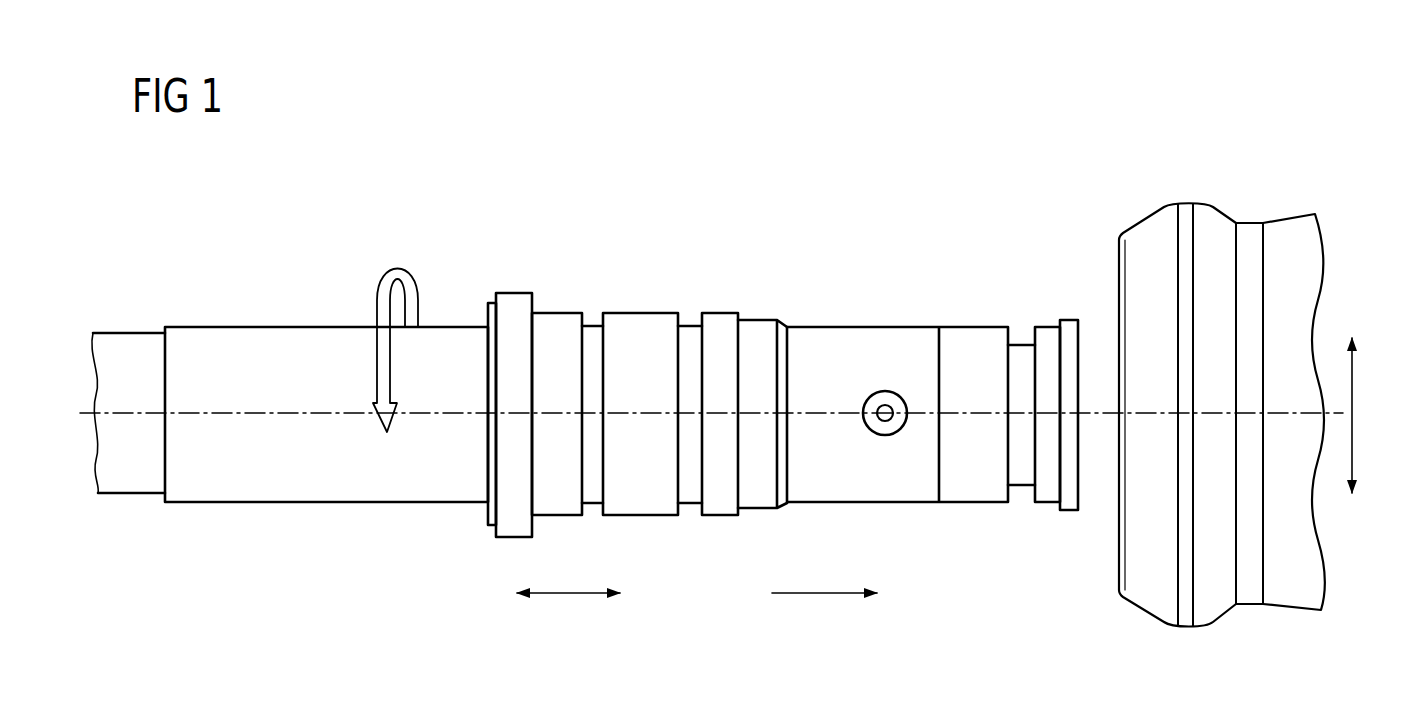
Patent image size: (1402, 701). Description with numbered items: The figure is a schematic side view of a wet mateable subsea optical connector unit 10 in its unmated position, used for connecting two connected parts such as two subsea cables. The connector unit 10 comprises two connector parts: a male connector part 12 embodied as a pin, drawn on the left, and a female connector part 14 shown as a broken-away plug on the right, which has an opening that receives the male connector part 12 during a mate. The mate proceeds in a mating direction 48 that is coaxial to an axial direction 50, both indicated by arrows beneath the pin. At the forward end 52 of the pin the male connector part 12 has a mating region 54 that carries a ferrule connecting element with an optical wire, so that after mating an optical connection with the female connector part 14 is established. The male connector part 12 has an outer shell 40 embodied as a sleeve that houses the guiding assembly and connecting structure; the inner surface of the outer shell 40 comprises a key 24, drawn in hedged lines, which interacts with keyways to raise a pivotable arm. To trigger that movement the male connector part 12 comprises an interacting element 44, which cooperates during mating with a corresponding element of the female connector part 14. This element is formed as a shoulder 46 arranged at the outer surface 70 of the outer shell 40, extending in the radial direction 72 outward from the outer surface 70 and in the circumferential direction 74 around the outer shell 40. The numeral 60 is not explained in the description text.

The connector unit 10 is at (707, 187).
The male connector part 12 is at (510, 267).
The female connector part 14 is at (1212, 195).
The key 24 is at (888, 392).
The outer shell 40 is at (830, 335).
The interacting element 44 is at (490, 510).
The shoulder 46 is at (423, 443).
The mating direction 48 is at (815, 595).
The axial direction 50 is at (572, 595).
The forward end 52 is at (1018, 478).
The mating region 54 is at (1005, 237).
The shaft 60 is at (250, 415).
The outer surface 70 is at (548, 312).
The radial direction 72 is at (1355, 392).
The circumferential direction 74 is at (388, 283).